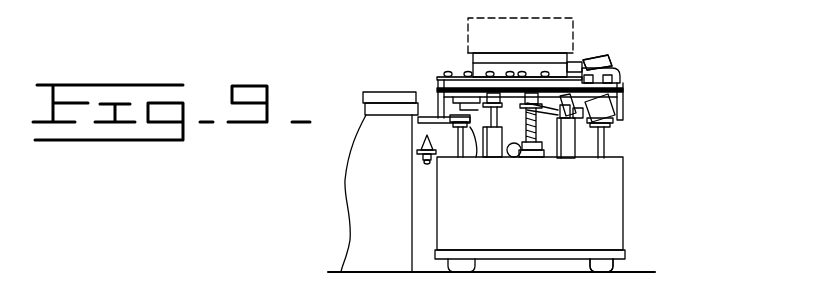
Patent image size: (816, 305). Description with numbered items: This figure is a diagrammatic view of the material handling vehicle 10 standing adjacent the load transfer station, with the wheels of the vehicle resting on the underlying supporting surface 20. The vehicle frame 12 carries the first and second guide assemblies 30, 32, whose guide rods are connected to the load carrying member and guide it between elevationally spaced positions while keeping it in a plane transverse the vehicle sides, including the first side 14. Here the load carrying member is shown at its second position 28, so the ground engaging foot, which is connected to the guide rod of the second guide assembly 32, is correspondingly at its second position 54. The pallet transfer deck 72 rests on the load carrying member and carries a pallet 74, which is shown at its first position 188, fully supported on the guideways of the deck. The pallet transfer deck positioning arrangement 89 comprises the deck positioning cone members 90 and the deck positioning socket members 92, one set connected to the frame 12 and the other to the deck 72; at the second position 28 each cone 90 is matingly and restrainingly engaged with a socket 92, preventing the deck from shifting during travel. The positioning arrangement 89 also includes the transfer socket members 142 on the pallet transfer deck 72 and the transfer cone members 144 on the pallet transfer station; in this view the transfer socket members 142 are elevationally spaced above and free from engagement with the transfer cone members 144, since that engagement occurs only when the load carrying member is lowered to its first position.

The material handling vehicle 10 is at (668, 25).
The frame 12 is at (536, 229).
The first side 14 is at (436, 168).
The underlying supporting surface 20 is at (640, 271).
The second position of the load carrying member 28 is at (642, 103).
The first guide assembly 30 is at (497, 158).
The second guide assembly 32 is at (570, 158).
The second position of the ground engaging foot 54 is at (568, 266).
The pallet transfer deck 72 is at (637, 65).
The pallet 74 is at (540, 45).
The pallet transfer deck positioning arrangement 89 is at (399, 141).
The deck positioning cone members 90 is at (465, 115).
The deck positioning socket members 92 is at (467, 120).
The transfer socket members 142 is at (430, 113).
The transfer cone members 144 is at (418, 143).
The first position of the pallet 188 is at (586, 32).